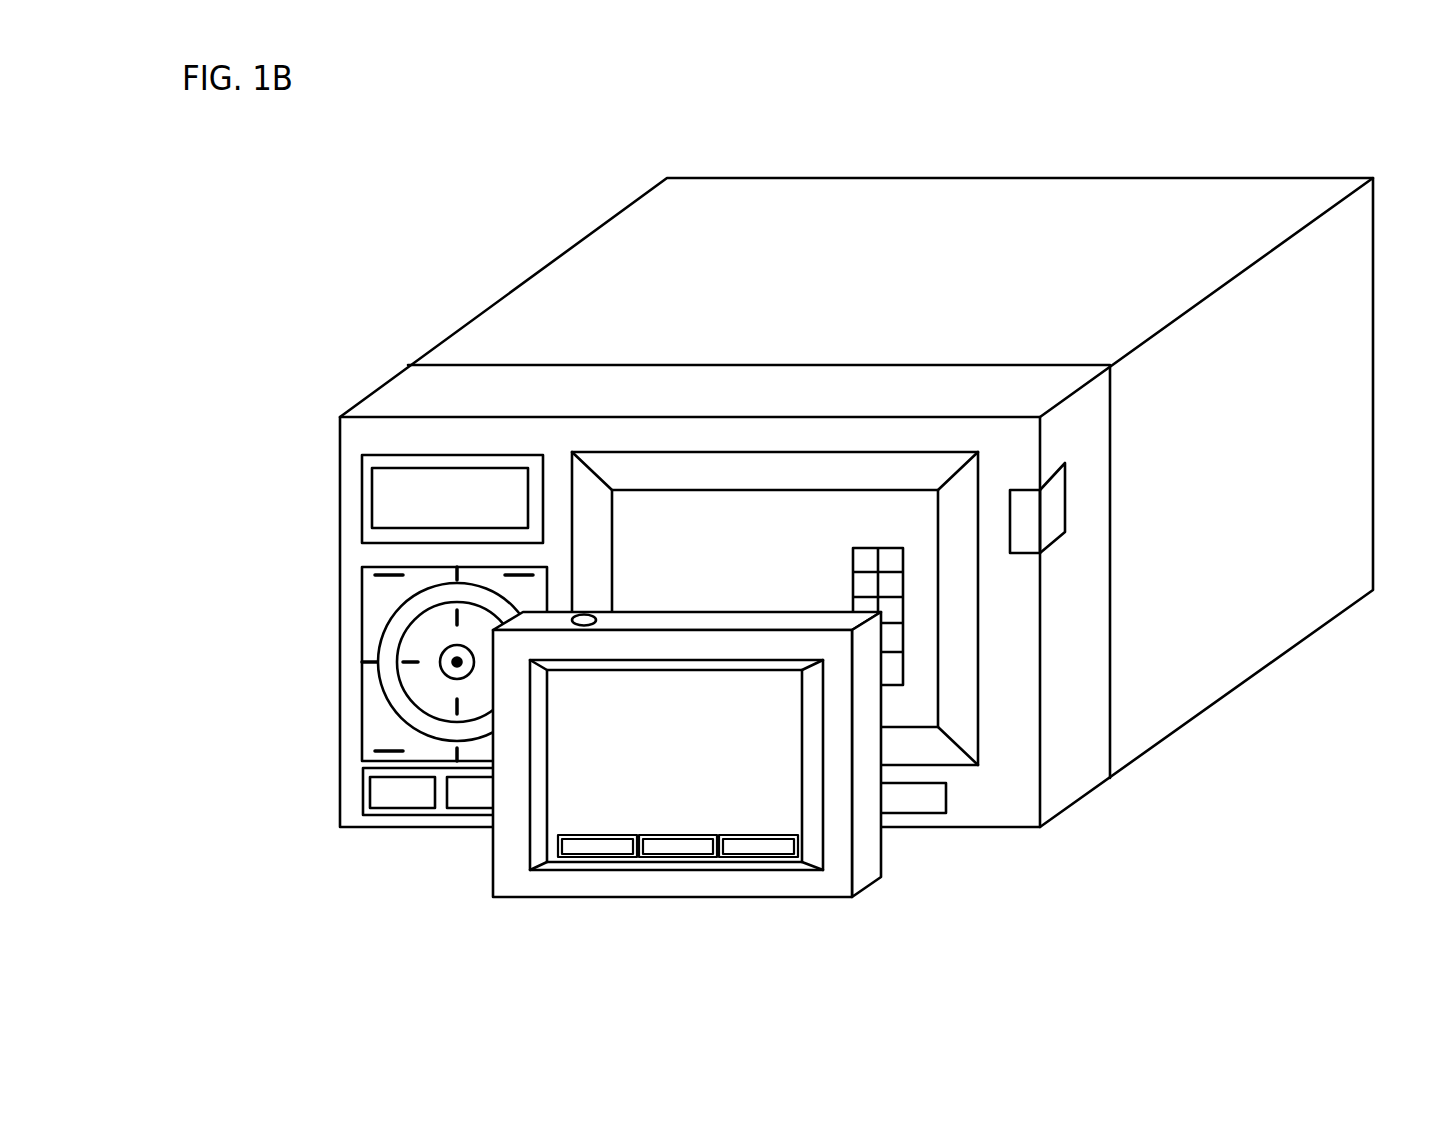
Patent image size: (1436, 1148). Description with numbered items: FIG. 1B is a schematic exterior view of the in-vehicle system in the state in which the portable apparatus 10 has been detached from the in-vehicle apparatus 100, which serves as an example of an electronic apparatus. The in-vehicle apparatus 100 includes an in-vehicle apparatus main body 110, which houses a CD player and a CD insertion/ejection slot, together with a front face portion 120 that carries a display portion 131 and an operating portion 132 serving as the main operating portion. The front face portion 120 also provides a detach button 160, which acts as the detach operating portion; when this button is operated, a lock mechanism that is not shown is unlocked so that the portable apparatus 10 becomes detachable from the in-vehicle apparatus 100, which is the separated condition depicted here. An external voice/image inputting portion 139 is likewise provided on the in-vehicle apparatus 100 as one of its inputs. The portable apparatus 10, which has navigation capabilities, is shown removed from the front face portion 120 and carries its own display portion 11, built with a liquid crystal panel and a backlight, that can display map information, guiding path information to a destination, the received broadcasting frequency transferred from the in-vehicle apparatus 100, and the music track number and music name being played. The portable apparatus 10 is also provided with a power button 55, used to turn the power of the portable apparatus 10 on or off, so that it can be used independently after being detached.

The in-vehicle apparatus 100 is at (856, 433).
The in-vehicle apparatus main body 110 is at (870, 225).
The front face portion 120 is at (445, 393).
The display portion 131 is at (380, 488).
The operating portion 132 is at (408, 657).
The external voice/image inputting portion 139 is at (927, 812).
The detach button 160 is at (1055, 512).
The portable apparatus 10 is at (580, 787).
The display portion 11 is at (735, 778).
The power button 55 is at (572, 624).